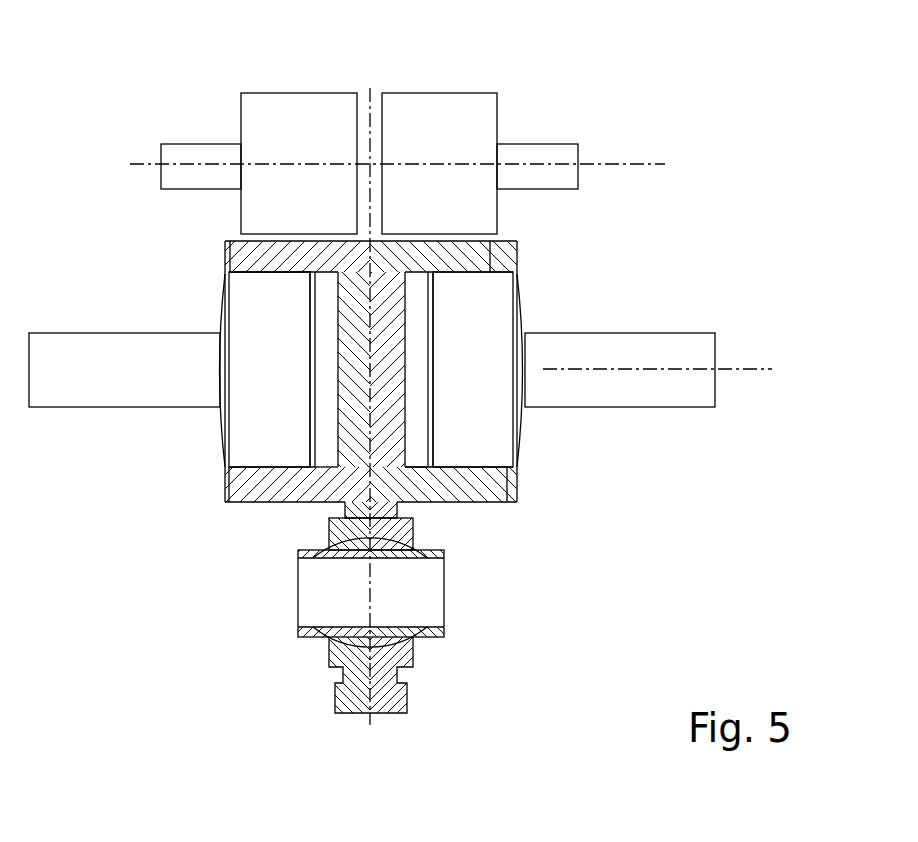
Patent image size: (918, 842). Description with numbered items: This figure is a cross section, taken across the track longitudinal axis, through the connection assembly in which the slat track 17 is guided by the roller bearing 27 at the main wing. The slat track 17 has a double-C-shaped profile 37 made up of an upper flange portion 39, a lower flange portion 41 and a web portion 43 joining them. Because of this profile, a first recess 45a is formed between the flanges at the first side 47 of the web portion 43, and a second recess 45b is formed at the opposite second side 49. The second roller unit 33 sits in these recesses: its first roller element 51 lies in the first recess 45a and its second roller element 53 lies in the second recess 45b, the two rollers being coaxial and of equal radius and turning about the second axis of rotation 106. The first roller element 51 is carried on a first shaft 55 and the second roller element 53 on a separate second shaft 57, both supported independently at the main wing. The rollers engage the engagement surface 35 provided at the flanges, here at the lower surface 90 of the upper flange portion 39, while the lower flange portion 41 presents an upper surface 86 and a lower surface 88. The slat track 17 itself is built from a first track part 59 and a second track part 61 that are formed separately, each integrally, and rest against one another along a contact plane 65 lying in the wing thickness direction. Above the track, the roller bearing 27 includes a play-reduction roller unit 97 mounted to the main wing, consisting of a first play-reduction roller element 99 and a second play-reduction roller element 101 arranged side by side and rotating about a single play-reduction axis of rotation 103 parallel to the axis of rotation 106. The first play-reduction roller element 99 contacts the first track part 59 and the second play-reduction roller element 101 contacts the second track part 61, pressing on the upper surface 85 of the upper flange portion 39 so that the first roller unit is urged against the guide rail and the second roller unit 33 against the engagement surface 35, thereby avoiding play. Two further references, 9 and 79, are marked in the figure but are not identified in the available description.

The valve device 9 is at (587, 188).
The slat track 17 is at (451, 258).
The roller bearing 27 is at (187, 219).
The second roller unit 33 is at (374, 387).
The engagement surface 35 is at (275, 268).
The double-C-shaped profile 37 is at (597, 530).
The upper flange portion 39 is at (305, 260).
The lower flange portion 41 is at (278, 503).
The web portion 43 is at (335, 390).
The first recess 45a is at (327, 302).
The second recess 45b is at (417, 295).
The first side 47 is at (337, 438).
The second side 49 is at (407, 437).
The first roller element 51 is at (269, 369).
The second roller element 53 is at (473, 369).
The first shaft 55 is at (62, 388).
The second shaft 57 is at (695, 388).
The first track part 59 is at (243, 258).
The second track part 61 is at (508, 253).
The contact plane 65 is at (370, 178).
The outer wall 79 is at (222, 468).
The upper surface 85 is at (500, 242).
The upper surface 86 is at (277, 462).
The lower surface 88 is at (298, 505).
The lower surface 90 is at (262, 272).
The play-reduction roller unit 97 is at (369, 124).
The first play-reduction roller element 99 is at (301, 110).
The second play-reduction roller element 101 is at (445, 110).
The play-reduction axis of rotation 103 is at (652, 168).
The second axis of rotation 106 is at (758, 370).